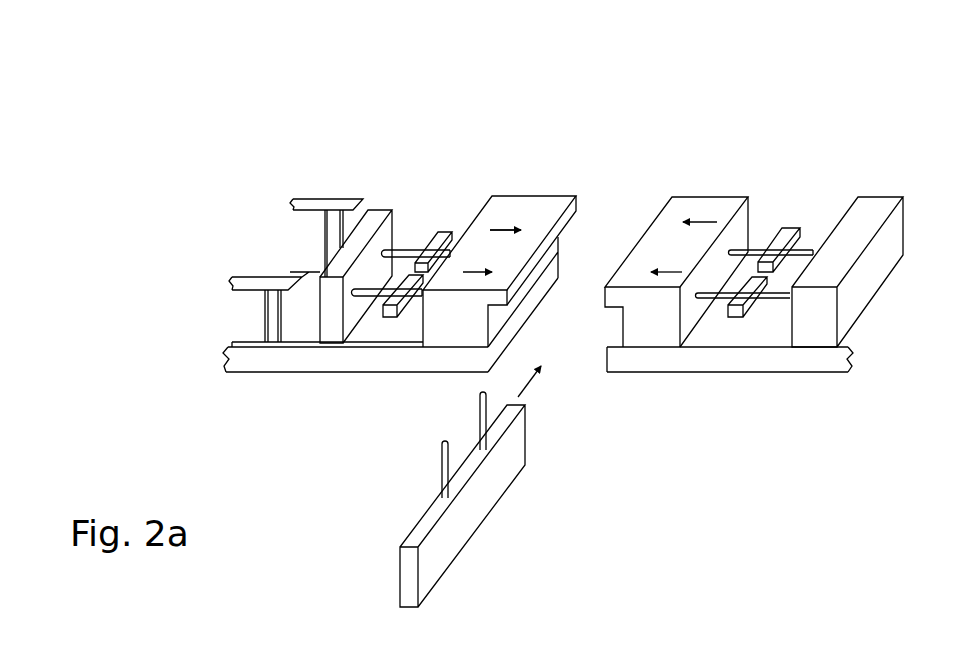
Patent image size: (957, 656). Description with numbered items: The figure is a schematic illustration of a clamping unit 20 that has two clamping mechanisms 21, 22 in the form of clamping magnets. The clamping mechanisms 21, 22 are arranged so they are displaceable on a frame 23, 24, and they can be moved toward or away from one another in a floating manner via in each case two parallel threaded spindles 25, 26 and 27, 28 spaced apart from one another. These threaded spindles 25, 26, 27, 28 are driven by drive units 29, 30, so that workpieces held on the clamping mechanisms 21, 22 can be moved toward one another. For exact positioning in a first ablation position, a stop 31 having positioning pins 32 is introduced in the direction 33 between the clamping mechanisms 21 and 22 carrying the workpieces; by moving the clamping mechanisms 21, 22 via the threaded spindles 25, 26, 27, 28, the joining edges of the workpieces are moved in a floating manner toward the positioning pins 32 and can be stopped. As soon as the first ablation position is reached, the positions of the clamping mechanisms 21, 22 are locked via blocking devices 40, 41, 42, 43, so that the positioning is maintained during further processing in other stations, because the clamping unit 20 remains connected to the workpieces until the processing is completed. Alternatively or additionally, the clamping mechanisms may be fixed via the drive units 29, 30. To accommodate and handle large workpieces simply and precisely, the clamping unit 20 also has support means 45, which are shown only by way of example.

The clamping unit 20 is at (800, 86).
The clamping mechanism 21 is at (437, 338).
The clamping mechanism 22 is at (658, 332).
The frame 23 is at (250, 373).
The frame 24 is at (822, 374).
The threaded spindle 25 is at (361, 298).
The threaded spindle 26 is at (405, 248).
The threaded spindle 27 is at (780, 300).
The threaded spindle 28 is at (818, 247).
The drive unit 29 is at (378, 214).
The drive unit 30 is at (882, 200).
The stop 31 is at (448, 552).
The positioning pins 32 is at (447, 480).
The direction 33 is at (526, 392).
The blocking device 40 is at (378, 318).
The blocking device 41 is at (446, 234).
The blocking device 42 is at (727, 313).
The blocking device 43 is at (795, 228).
The support means 45 is at (310, 200).